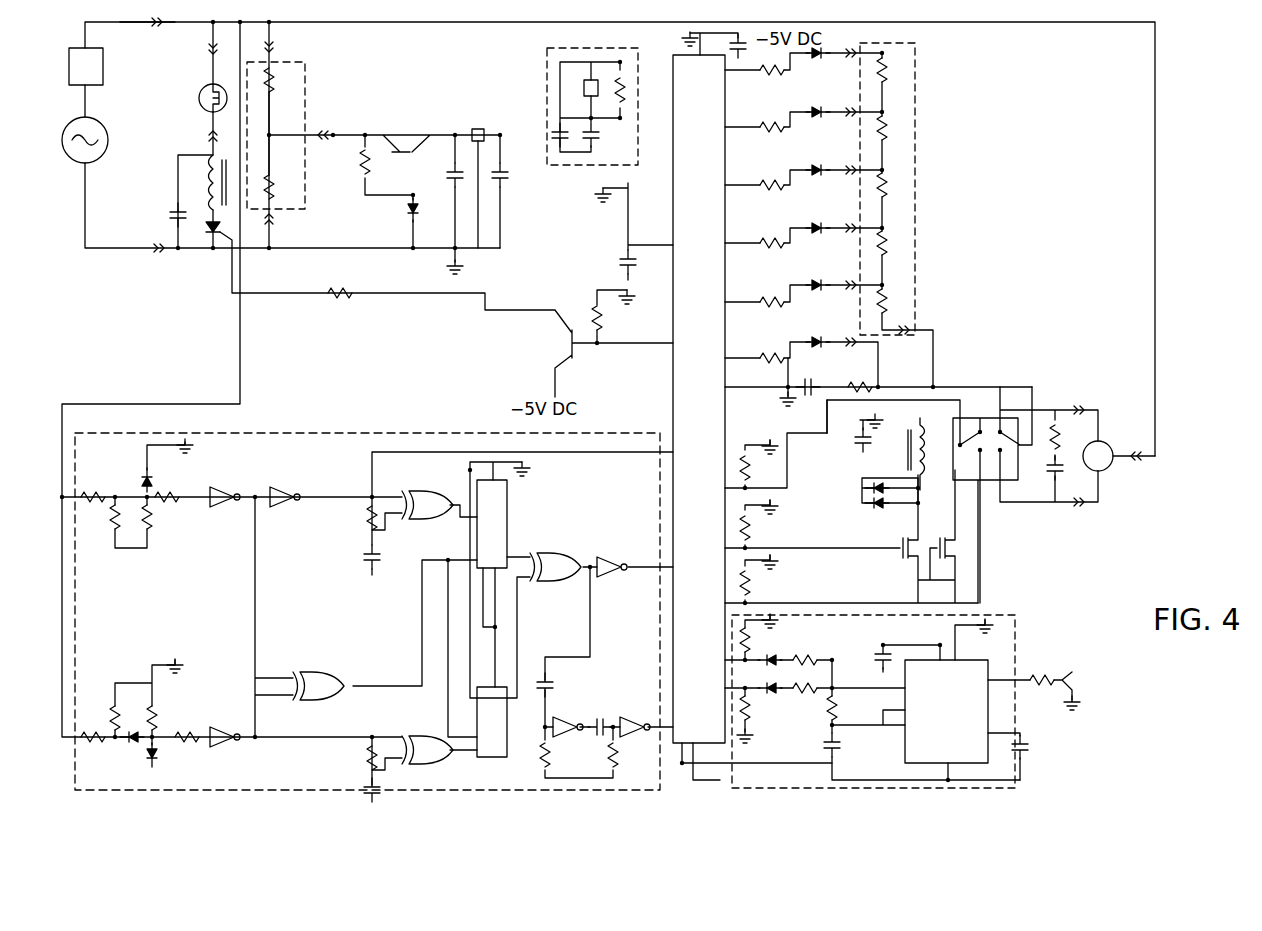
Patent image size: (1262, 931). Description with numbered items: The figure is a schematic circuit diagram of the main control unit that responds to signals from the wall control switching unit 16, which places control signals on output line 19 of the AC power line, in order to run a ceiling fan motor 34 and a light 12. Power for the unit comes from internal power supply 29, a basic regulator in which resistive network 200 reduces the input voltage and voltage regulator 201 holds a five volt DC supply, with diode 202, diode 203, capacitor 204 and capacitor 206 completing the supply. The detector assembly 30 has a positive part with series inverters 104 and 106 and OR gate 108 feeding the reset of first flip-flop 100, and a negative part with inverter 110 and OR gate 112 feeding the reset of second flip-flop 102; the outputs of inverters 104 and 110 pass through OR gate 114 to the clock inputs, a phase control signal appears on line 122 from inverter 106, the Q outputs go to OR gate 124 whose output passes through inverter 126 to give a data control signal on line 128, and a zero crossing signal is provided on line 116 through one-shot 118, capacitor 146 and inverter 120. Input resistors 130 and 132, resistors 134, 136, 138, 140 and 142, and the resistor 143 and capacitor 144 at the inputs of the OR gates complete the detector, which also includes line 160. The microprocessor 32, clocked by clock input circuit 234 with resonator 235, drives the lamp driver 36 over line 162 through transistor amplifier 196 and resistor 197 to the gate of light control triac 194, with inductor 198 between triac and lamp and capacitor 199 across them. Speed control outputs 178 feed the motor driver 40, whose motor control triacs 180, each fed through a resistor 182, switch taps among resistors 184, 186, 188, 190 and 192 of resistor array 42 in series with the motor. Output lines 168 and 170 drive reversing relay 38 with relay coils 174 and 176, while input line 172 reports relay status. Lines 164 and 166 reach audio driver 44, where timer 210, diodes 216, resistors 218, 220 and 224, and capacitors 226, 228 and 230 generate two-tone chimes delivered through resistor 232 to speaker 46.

The light 12 is at (199, 92).
The wall control switching unit 16 is at (103, 66).
The output line 19 is at (130, 25).
The power supply 29 is at (396, 72).
The detector assembly 30 is at (340, 433).
The microprocessor 32 is at (699, 399).
The fan motor 34 is at (1113, 463).
The lamp driver 36 is at (150, 250).
The reversing relay 38 is at (1000, 418).
The motor driver 40 is at (869, 44).
The resistor array 42 is at (915, 160).
The audio driver 44 is at (1015, 635).
The speaker 46 is at (1080, 685).
The first flip-flop 100 is at (507, 500).
The second flip-flop 102 is at (507, 700).
The inverter 104 is at (242, 472).
The inverter 106 is at (290, 503).
The OR gate 108 is at (405, 497).
The inverter 110 is at (215, 745).
The OR gate 112 is at (470, 715).
The OR gate 114 is at (365, 677).
The zero crossing output line 116 is at (617, 765).
The one-shot 118 is at (555, 690).
The inverter 120 is at (603, 712).
The phase control signal line 122 is at (555, 452).
The OR gate 124 is at (535, 555).
The inverter 126 is at (613, 595).
The data control signal line 128 is at (661, 551).
The input resistor 130 is at (108, 492).
The input resistor 132 is at (88, 742).
The resistor 134 is at (170, 502).
The resistor 136 is at (180, 732).
The resistor 138 is at (108, 520).
The resistor 140 is at (110, 705).
The resistor 142 is at (160, 713).
The resistor 143 is at (365, 515).
The capacitor 144 is at (363, 555).
The capacitor 146 is at (560, 712).
The input line 160 is at (673, 572).
The lighting control output line 162 is at (632, 348).
The high control input line 164 is at (740, 660).
The low control input line 166 is at (740, 688).
The output line 168 is at (760, 490).
The output line 170 is at (760, 552).
The input line 172 is at (750, 387).
The relay coil 174 is at (897, 506).
The relay coil 176 is at (925, 460).
The speed control outputs 178 is at (740, 358).
The motor control triacs 180 is at (834, 320).
The resistor 182 is at (758, 358).
The resistor 184 is at (890, 299).
The resistor 186 is at (890, 241).
The resistor 188 is at (890, 183).
The resistor 190 is at (890, 126).
The resistor 192 is at (890, 68).
The light control triac 194 is at (216, 240).
The transistor amplifier 196 is at (572, 325).
The resistor 197 is at (338, 298).
The inductor 198 is at (206, 182).
The capacitor 199 is at (170, 215).
The resistive network 200 is at (305, 75).
The voltage regulator 201 is at (478, 129).
The diode 202 is at (340, 135).
The diode 203 is at (408, 216).
The capacitor 204 is at (448, 180).
The capacitor 206 is at (508, 182).
The timer 210 is at (949, 699).
The diodes 216 is at (790, 665).
The resistor 218 is at (805, 682).
The resistor 220 is at (752, 712).
The resistor 224 is at (825, 718).
The capacitor 226 is at (840, 745).
The capacitor 228 is at (880, 645).
The capacitor 230 is at (1028, 748).
The resistor 232 is at (1042, 675).
The microcomputer clock input circuit 234 is at (567, 50).
The resonator 235 is at (591, 80).